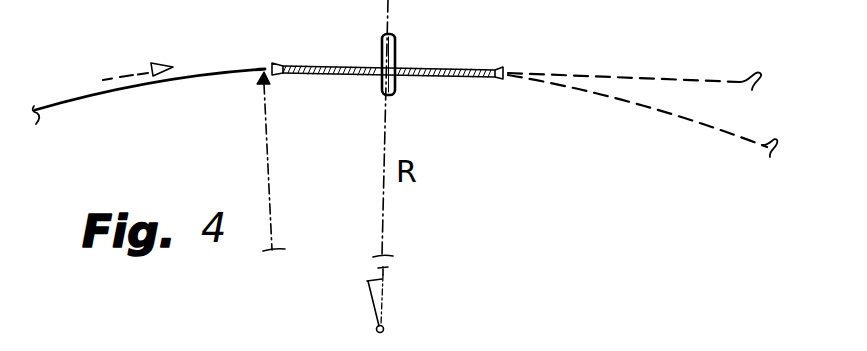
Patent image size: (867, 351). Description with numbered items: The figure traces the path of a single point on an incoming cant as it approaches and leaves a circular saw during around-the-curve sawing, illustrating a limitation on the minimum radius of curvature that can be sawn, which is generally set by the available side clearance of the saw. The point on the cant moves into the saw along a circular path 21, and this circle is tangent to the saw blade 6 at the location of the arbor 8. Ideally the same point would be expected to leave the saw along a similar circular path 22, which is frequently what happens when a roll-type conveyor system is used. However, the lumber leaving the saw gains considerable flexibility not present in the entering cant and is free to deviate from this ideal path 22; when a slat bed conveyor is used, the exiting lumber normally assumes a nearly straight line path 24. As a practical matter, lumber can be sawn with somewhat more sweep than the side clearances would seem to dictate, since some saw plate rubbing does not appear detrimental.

The circular path 21 is at (200, 77).
The saw blade 6 is at (458, 69).
The arbor 8 is at (396, 51).
The straight line path 24 is at (645, 78).
The circular path 22 is at (665, 111).